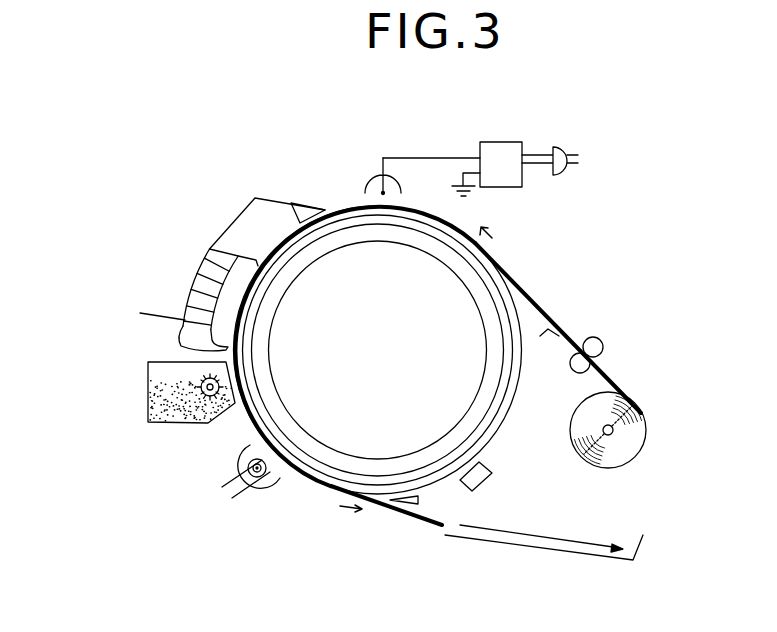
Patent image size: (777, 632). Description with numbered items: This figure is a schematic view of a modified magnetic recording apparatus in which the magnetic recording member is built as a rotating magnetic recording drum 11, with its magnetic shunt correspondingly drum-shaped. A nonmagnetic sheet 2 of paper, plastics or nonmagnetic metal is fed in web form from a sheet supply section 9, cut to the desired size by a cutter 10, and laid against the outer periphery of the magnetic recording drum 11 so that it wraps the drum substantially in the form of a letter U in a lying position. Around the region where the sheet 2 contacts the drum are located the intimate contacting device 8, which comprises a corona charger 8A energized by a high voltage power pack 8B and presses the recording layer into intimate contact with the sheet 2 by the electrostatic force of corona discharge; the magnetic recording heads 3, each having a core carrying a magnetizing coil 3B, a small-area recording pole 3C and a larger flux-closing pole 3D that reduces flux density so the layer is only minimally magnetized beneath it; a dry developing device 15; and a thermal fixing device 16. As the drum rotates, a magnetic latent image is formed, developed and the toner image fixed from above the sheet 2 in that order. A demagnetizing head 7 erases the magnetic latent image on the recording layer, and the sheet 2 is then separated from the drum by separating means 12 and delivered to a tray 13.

The nonmagnetic sheet 2 is at (531, 292).
The magnetic recording heads 3 is at (235, 190).
The magnetizing coil 3B is at (198, 233).
The recording pole 3C is at (200, 349).
The flux-closing pole 3D is at (293, 204).
The demagnetizing head 7 is at (487, 472).
The intimate contacting device 8 is at (436, 138).
The corona charger 8A is at (368, 178).
The high voltage power pack 8B is at (505, 142).
The sheet supply section 9 is at (644, 440).
The cutter 10 is at (561, 316).
The magnetic recording drum 11 is at (511, 408).
The separating means 12 is at (420, 500).
The tray 13 is at (545, 551).
The dry developing device 15 is at (165, 423).
The thermal fixing device 16 is at (278, 481).